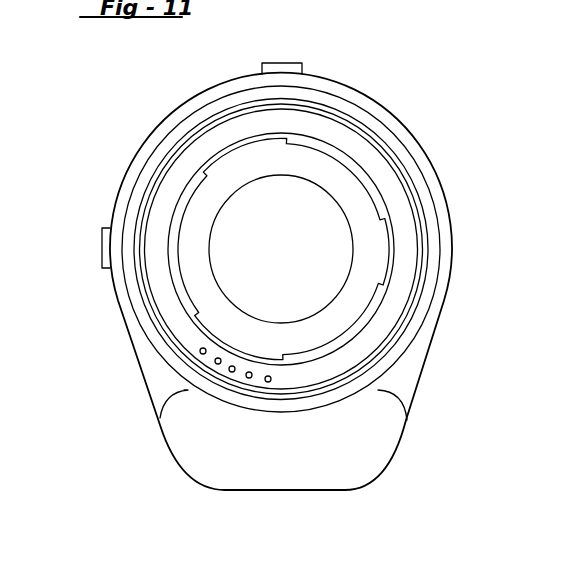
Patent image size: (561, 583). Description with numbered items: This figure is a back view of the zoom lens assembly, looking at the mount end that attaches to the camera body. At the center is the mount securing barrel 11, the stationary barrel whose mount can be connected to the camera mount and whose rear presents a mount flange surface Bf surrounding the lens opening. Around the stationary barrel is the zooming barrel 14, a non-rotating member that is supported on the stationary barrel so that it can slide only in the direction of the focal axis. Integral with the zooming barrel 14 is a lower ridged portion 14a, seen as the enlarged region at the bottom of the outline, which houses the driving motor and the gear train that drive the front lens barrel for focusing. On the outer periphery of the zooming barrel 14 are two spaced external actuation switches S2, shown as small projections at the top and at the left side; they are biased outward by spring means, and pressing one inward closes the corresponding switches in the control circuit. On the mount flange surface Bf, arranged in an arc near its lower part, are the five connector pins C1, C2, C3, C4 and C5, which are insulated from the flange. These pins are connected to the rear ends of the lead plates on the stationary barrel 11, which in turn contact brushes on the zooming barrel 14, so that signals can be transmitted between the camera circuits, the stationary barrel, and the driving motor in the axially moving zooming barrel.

The mount securing barrel 11 is at (366, 128).
The zooming barrel 14 is at (452, 208).
The lower ridged portion 14a is at (383, 434).
The external actuation switch S2 is at (300, 63).
The mount flange surface Bf is at (167, 310).
The connector pin C1 is at (201, 354).
The connector pin C2 is at (216, 364).
The connector pin C3 is at (231, 372).
The connector pin C4 is at (248, 378).
The connector pin C5 is at (268, 382).